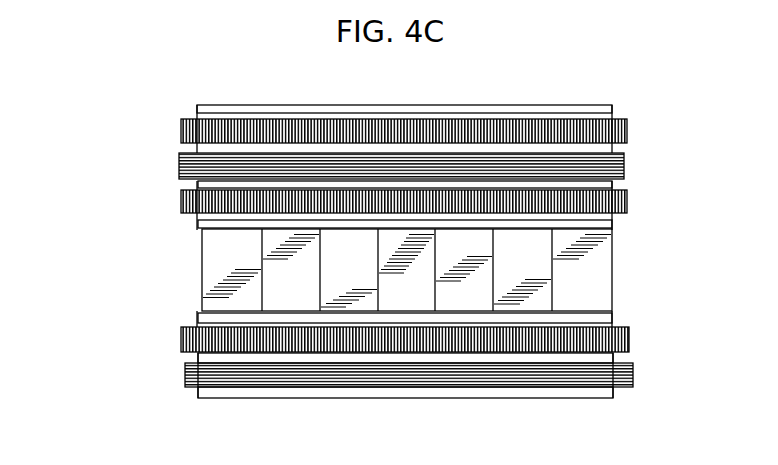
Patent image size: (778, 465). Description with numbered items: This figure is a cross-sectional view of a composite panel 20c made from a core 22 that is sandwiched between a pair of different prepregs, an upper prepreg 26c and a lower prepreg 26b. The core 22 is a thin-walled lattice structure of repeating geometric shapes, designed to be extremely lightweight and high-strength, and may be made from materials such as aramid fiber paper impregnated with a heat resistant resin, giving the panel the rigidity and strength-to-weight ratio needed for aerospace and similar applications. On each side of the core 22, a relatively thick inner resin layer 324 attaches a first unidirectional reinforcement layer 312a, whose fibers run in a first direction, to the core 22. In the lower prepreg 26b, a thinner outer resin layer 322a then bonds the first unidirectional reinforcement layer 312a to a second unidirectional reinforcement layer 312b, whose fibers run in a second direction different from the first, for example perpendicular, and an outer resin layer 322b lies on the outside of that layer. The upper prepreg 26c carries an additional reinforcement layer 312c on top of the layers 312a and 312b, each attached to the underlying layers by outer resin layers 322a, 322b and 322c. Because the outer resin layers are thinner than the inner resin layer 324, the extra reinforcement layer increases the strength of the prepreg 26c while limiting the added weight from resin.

The composite panel 20c is at (375, 76).
The prepreg 26c is at (90, 102).
The prepreg 26b is at (98, 312).
The outer resin layer 322c is at (197, 109).
The outer resin layer 322b is at (197, 148).
The outer resin layer 322a is at (612, 185).
The reinforcement layer 312c is at (627, 125).
The second unidirectional reinforcement layer 312b is at (180, 166).
The first unidirectional reinforcement layer 312a is at (628, 205).
The inner resin layer 324 is at (197, 226).
The core 22 is at (612, 270).